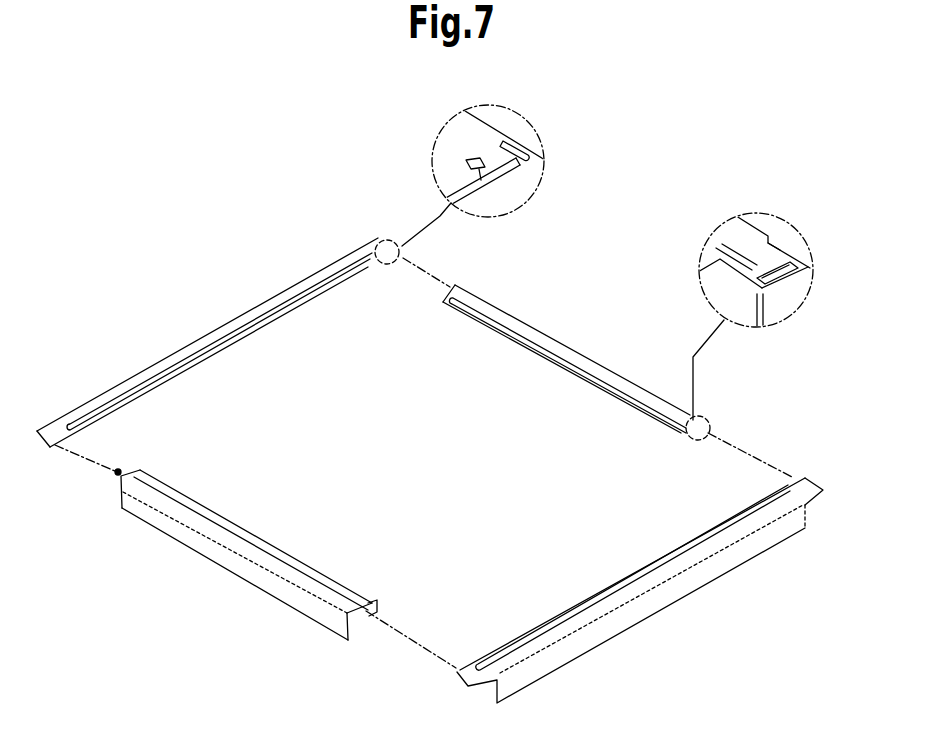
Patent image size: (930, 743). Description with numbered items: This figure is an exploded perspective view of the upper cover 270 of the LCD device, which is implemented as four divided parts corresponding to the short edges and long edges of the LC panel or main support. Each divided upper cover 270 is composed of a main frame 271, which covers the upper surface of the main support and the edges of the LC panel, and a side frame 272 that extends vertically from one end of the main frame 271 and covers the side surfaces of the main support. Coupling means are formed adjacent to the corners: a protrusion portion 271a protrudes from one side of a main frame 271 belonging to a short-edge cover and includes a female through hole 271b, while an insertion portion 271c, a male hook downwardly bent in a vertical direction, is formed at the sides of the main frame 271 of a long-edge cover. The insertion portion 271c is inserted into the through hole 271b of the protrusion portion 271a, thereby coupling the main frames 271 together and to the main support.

The upper cover 270 is at (602, 326).
The main frame 271 is at (437, 146).
The protrusion portion 271a is at (767, 252).
The through hole 271b is at (783, 268).
The insertion portion 271c is at (505, 173).
The side frame 272 is at (743, 314).